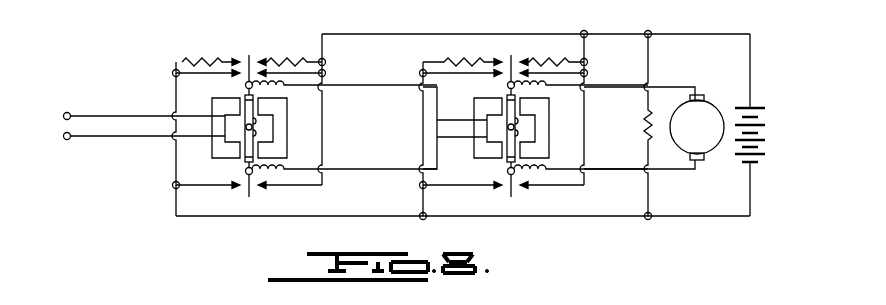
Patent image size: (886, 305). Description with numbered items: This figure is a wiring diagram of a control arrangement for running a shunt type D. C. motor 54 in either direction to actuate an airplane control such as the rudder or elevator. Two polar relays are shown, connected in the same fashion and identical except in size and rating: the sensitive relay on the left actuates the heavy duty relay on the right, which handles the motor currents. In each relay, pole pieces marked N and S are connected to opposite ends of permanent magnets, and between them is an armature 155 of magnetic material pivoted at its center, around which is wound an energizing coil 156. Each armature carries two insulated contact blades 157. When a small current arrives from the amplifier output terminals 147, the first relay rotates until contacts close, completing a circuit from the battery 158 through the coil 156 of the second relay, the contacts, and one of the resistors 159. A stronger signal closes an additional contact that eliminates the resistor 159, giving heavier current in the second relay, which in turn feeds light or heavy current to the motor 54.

The amplifier output terminals 147 is at (125, 128).
The armature 155 is at (253, 142).
The energizing coil 156 is at (243, 123).
The contact blades 157 is at (250, 54).
The battery 158 is at (762, 150).
The resistors 159 is at (212, 60).
The shunt type D. C. motor 54 is at (688, 135).